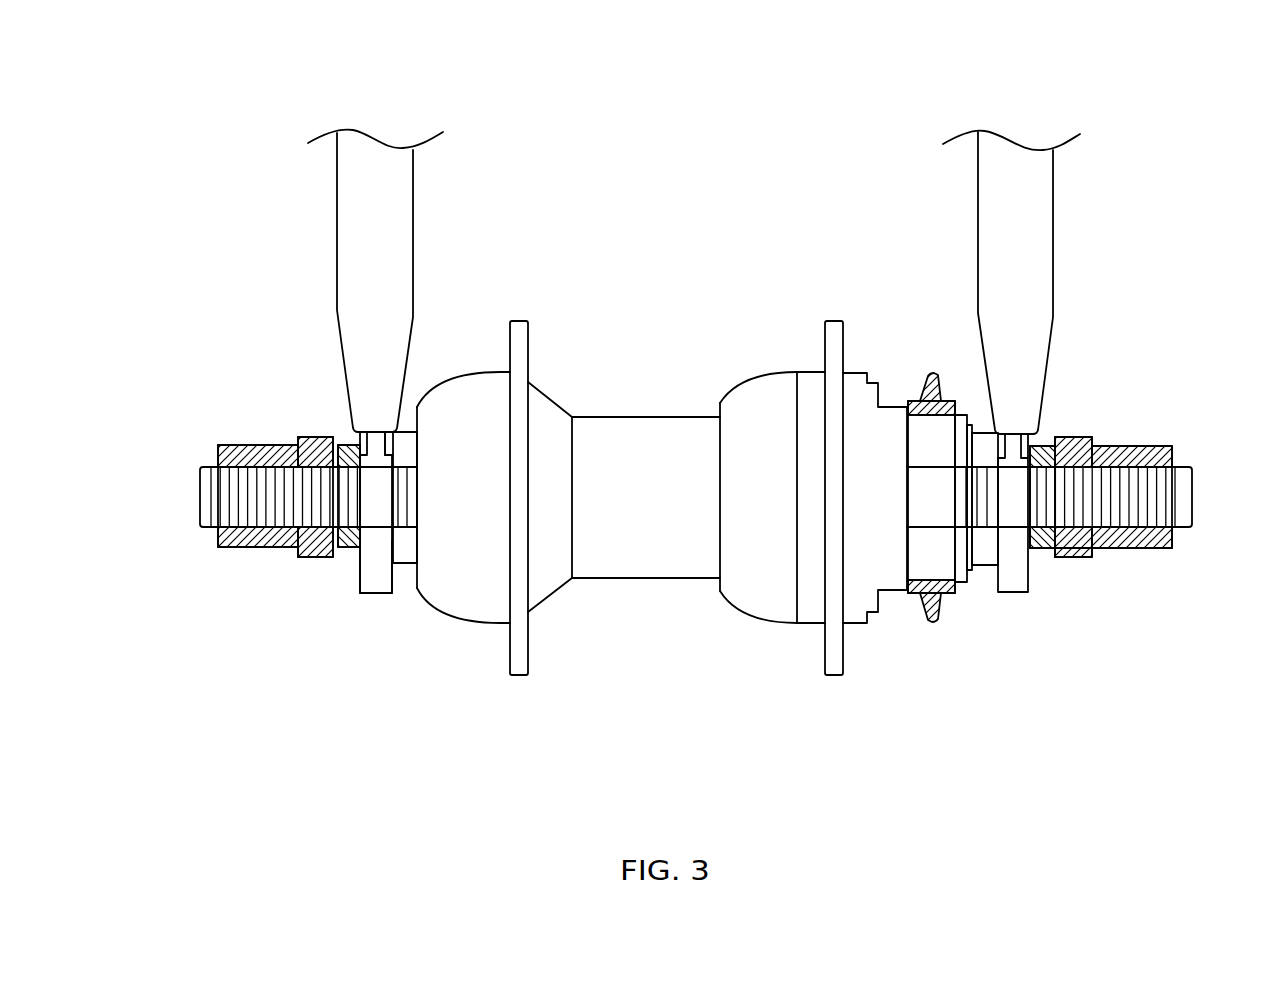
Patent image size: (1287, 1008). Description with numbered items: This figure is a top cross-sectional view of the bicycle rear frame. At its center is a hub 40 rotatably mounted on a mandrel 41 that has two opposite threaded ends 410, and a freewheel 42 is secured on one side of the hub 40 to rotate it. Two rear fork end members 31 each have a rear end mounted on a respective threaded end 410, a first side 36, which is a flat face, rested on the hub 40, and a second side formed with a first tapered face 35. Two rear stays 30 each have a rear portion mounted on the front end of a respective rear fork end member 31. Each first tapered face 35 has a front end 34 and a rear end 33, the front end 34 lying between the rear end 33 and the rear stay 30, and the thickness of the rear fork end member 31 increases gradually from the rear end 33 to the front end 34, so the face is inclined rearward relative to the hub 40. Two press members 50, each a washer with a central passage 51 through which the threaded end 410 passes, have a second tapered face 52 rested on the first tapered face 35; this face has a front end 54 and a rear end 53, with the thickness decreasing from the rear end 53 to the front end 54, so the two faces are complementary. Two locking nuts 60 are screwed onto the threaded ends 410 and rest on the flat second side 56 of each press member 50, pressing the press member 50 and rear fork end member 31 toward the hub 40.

The rear stay 30 is at (337, 240).
The rear fork end member 31 is at (380, 592).
The rear end of the first tapered face 33 is at (337, 528).
The front end of the first tapered face 34 is at (367, 455).
The first tapered face 35 is at (357, 508).
The first side 36 is at (997, 550).
The hub 40 is at (645, 415).
The mandrel 41 is at (654, 522).
The threaded end 410 is at (215, 506).
The freewheel 42 is at (926, 606).
The press member 50 is at (350, 550).
The passage 51 is at (1047, 447).
The second tapered face 52 is at (362, 497).
The rear end of the second tapered face 53 is at (423, 632).
The front end of the second tapered face 54 is at (290, 383).
The second side 56 is at (1070, 558).
The locking nut 60 is at (262, 550).